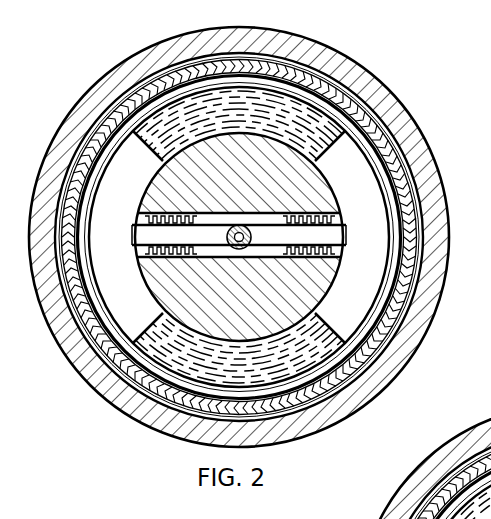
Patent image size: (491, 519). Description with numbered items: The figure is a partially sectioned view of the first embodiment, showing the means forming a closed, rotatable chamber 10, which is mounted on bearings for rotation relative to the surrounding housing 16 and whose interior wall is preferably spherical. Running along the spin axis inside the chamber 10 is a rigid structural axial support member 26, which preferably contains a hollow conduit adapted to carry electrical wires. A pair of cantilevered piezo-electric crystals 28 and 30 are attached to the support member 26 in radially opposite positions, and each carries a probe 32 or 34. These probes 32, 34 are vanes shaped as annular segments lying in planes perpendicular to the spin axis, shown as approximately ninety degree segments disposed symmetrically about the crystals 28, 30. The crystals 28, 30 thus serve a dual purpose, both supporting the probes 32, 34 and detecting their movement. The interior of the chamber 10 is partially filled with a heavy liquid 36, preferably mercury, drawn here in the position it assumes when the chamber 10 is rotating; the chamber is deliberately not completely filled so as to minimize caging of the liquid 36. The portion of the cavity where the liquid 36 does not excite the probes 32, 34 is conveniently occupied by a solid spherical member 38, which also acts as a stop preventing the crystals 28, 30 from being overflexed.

The chamber 10 is at (380, 100).
The housing 16 is at (75, 352).
The axial support member 26 is at (245, 228).
The piezo-electric crystal 28 is at (198, 231).
The piezo-electric crystal 30 is at (275, 237).
The probe 32 is at (137, 181).
The probe 34 is at (362, 183).
The liquid 36 is at (329, 356).
The solid spherical member 38 is at (227, 287).